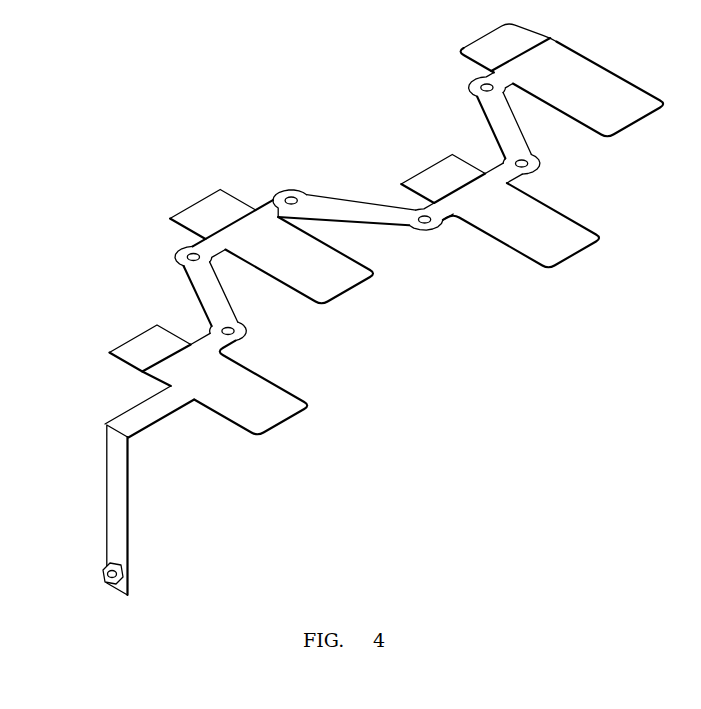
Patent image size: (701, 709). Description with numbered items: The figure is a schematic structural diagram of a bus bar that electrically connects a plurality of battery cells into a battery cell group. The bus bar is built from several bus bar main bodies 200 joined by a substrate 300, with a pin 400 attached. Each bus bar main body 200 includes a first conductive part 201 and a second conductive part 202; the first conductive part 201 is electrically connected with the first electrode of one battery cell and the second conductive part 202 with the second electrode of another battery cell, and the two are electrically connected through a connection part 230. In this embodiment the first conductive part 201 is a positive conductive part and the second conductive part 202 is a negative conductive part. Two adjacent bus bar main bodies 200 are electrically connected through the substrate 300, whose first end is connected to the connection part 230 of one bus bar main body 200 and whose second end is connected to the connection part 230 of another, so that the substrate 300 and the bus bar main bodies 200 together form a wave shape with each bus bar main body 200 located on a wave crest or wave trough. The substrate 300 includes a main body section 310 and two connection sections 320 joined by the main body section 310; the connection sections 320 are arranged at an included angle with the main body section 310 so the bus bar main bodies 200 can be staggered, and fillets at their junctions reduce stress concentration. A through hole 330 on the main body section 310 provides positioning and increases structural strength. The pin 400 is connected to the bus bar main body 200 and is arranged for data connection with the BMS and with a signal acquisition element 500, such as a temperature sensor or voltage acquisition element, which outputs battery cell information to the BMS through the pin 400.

The bus bar main body 200 is at (189, 448).
The first conductive part 201 is at (272, 410).
The second conductive part 202 is at (115, 366).
The connection part 230 is at (217, 383).
The substrate 300 is at (350, 182).
The main body section 310 is at (348, 210).
The connection section 320 is at (276, 205).
The through hole 330 is at (424, 233).
The pin 400 is at (118, 486).
The signal acquisition element 500 is at (110, 578).